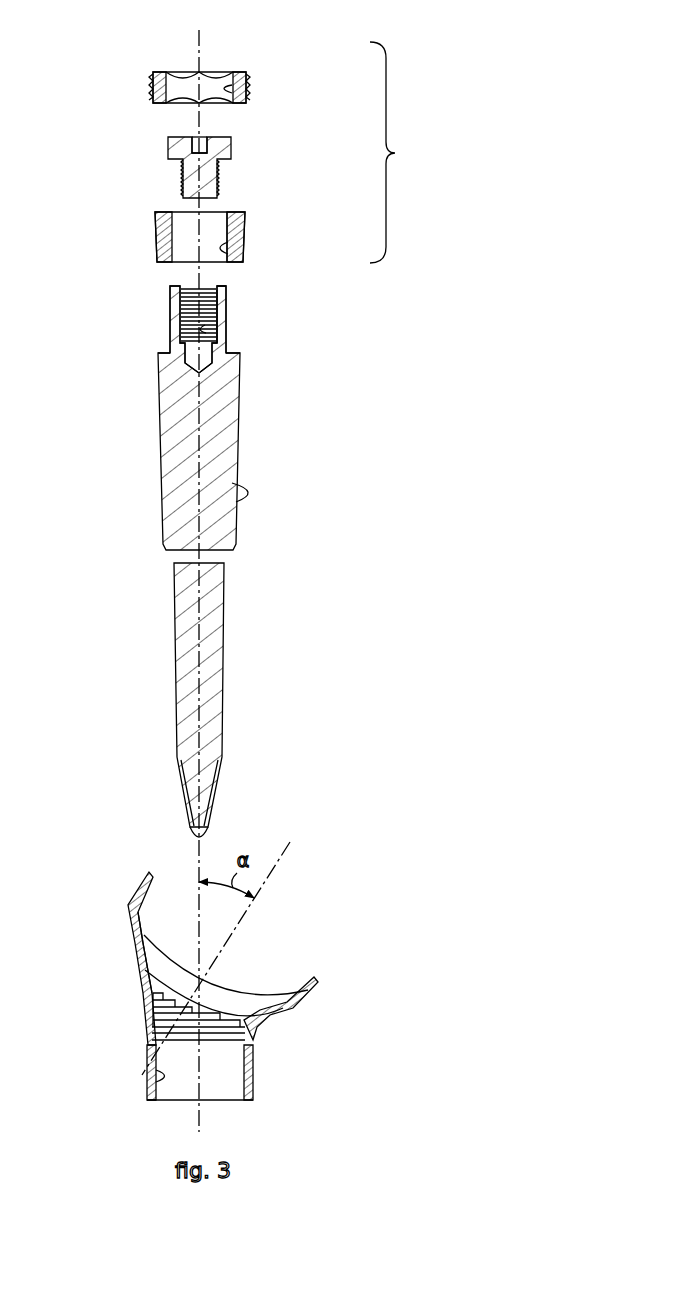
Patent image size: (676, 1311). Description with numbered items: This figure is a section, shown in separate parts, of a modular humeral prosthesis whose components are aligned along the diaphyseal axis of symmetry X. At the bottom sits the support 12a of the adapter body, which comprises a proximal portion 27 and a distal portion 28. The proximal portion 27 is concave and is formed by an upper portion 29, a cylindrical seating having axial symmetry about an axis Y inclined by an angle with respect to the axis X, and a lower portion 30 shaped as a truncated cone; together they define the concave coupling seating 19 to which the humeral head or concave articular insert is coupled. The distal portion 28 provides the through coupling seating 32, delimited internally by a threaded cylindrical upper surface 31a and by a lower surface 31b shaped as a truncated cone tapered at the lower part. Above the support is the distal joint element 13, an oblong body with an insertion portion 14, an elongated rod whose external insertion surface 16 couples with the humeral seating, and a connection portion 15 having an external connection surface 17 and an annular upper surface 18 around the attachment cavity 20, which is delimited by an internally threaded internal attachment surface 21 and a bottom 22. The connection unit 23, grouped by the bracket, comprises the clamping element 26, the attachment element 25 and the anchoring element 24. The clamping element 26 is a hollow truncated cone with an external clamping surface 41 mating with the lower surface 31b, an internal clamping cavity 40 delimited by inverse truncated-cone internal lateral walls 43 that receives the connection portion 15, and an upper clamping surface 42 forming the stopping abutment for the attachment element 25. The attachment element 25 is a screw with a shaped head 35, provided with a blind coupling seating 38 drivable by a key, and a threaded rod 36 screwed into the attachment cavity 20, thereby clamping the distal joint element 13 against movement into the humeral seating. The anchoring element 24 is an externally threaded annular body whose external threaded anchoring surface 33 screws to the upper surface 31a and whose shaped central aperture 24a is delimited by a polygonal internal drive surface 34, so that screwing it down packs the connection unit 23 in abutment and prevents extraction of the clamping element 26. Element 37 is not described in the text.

The support 12a is at (235, 980).
The distal joint element 13 is at (209, 549).
The insertion portion 14 is at (172, 436).
The connection portion 15 is at (181, 312).
The external insertion surface 16 is at (231, 488).
The external connection surface 17 is at (227, 316).
The upper surface 18 is at (226, 289).
The coupling seating 19 is at (160, 912).
The attachment cavity 20 is at (195, 317).
The internal attachment surface 21 is at (206, 331).
The bottom 22 is at (186, 364).
The connection unit 23 is at (393, 152).
The anchoring element 24 is at (182, 63).
The shaped central aperture 24a is at (181, 70).
The attachment element 25 is at (227, 148).
The clamping element 26 is at (184, 215).
The proximal portion 27 is at (324, 993).
The distal portion 28 is at (267, 1068).
The upper portion 29 is at (136, 897).
The lower portion 30 is at (139, 950).
The upper surface 31a is at (173, 1013).
The lower surface 31b is at (156, 1083).
The through coupling seating 32 is at (166, 1090).
The external threaded anchoring surface 33 is at (244, 78).
The internal drive surface 34 is at (247, 88).
The shaped head 35 is at (229, 153).
The threaded rod 36 is at (218, 177).
The screw slot 37 is at (168, 137).
The blind coupling seating 38 is at (189, 132).
The internal clamping cavity 40 is at (178, 225).
The external clamping surface 41 is at (247, 227).
The upper clamping surface 42 is at (240, 207).
The internal lateral walls 43 is at (244, 256).
The axis of symmetry X is at (201, 41).
The axis Y is at (289, 856).